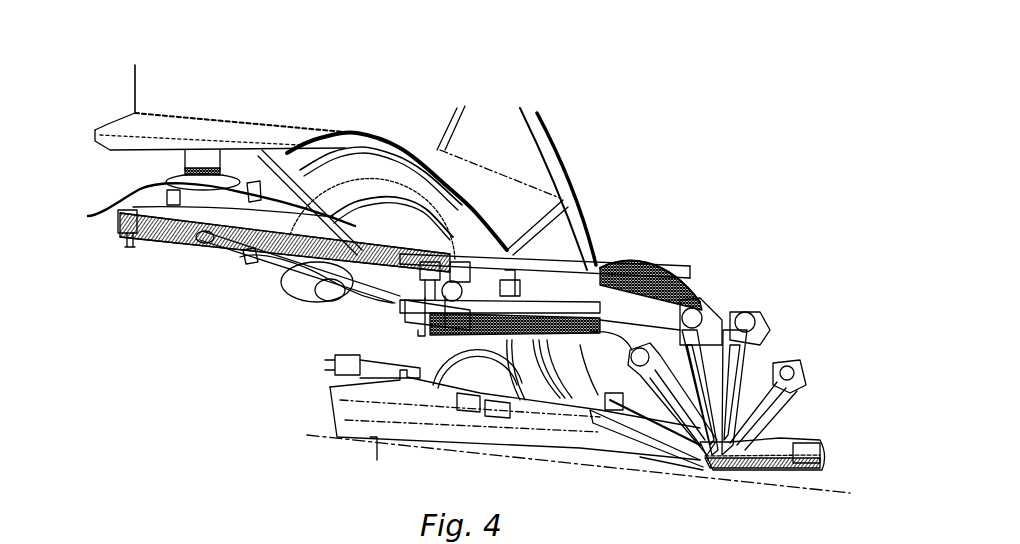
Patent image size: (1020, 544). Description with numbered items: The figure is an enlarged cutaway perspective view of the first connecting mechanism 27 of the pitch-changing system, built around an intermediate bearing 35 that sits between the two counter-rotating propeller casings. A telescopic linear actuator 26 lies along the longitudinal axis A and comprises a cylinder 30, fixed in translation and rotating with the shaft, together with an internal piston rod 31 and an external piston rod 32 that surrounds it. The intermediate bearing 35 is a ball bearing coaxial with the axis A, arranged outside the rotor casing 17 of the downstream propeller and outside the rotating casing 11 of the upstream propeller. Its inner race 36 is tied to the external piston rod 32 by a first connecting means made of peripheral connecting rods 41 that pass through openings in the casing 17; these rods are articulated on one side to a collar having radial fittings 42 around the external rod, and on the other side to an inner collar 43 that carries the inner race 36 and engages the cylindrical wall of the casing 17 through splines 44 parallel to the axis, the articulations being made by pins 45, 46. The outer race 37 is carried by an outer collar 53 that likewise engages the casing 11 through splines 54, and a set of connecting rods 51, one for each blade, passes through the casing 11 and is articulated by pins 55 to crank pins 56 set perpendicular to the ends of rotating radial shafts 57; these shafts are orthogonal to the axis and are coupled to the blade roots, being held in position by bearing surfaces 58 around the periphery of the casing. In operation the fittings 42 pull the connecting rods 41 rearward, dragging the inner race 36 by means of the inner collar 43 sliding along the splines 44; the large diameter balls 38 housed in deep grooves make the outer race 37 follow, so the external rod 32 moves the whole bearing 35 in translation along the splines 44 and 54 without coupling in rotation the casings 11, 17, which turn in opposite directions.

The rotating casing of the upstream propeller 11 is at (345, 172).
The rotor casing of the downstream propeller 17 is at (717, 352).
The linear actuator 26 is at (338, 448).
The first connecting mechanism 27 is at (243, 310).
The cylinder 30 is at (330, 388).
The internal piston rod 31 is at (377, 437).
The external piston rod 32 is at (592, 433).
The intermediate bearing 35 is at (385, 305).
The inner race 36 is at (443, 320).
The outer race 37 is at (420, 265).
The balls 38 is at (413, 290).
The connecting rods 41 is at (657, 313).
The radial fittings 42 is at (737, 423).
The inner collar 43 is at (480, 295).
The splines 44 is at (533, 265).
The pins 45 is at (737, 313).
The pins 46 is at (555, 235).
The connecting rods 51 is at (200, 237).
The outer collar 53 is at (457, 262).
The splines 54 is at (660, 270).
The pins 55 is at (121, 242).
The crank pins 56 is at (173, 208).
The rotating radial shafts 57 is at (190, 160).
The bearing surfaces 58 is at (243, 187).
The longitudinal axis A is at (797, 487).